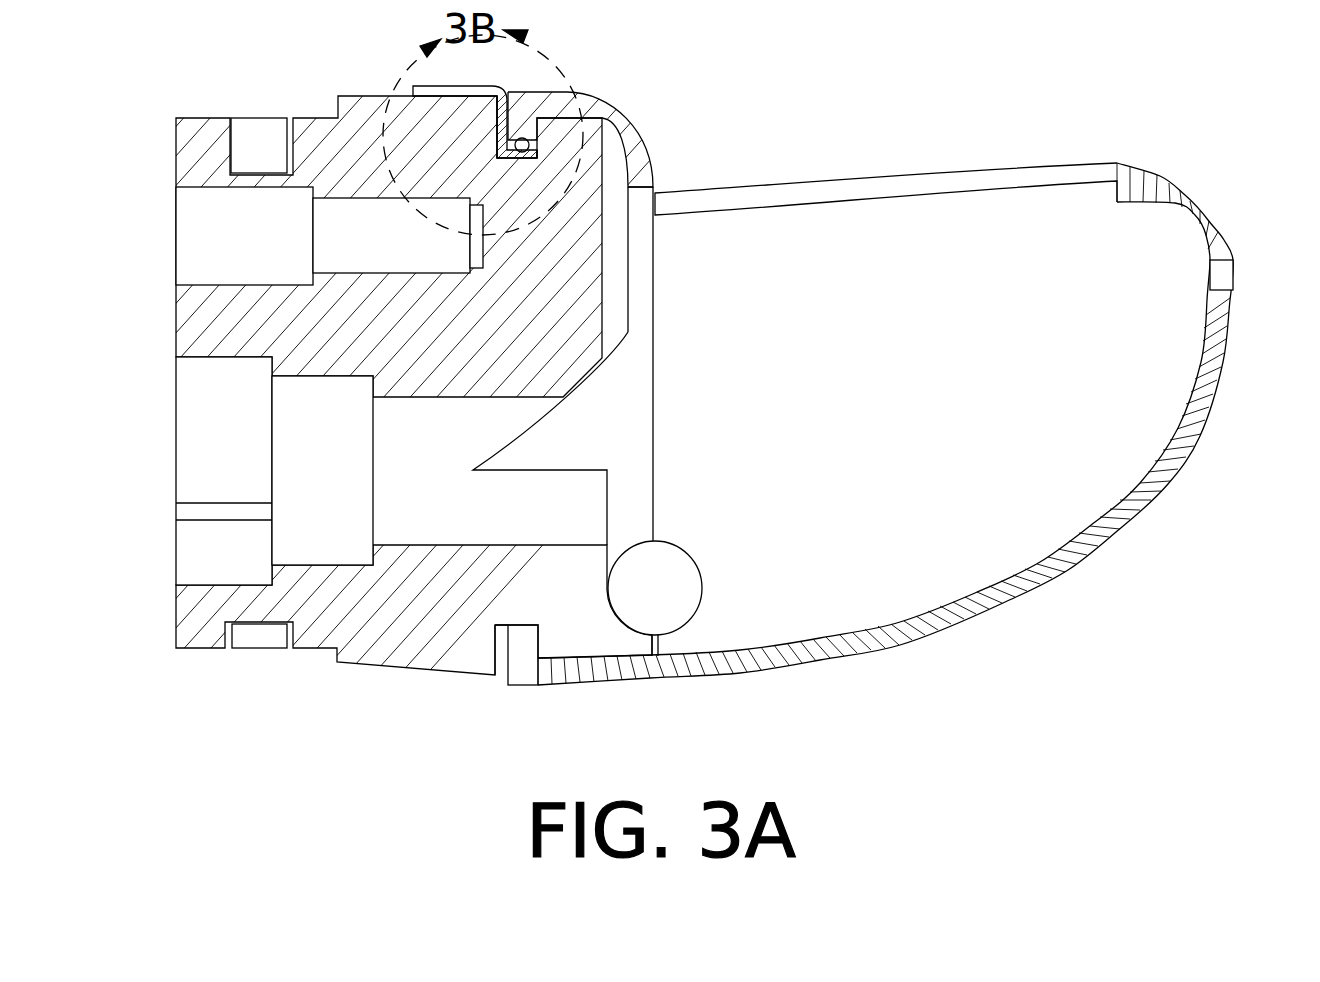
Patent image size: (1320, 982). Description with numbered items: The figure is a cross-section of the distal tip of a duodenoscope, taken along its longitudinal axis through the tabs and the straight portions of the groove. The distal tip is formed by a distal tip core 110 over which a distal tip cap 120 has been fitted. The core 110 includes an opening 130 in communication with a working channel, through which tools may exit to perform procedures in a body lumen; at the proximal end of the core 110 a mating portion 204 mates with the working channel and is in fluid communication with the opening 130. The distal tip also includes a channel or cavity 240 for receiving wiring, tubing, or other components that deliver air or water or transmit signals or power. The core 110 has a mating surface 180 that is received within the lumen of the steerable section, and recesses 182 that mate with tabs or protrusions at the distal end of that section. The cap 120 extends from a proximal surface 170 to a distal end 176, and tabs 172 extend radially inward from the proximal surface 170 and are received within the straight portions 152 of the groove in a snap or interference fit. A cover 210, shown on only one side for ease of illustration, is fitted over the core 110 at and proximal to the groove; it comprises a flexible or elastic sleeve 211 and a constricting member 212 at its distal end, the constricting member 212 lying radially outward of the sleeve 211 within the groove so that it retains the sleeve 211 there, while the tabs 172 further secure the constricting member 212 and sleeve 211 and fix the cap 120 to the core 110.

The distal tip core 110 is at (325, 622).
The distal tip cap 120 is at (1095, 377).
The opening 130 is at (558, 508).
The straight portions 152 is at (495, 155).
The proximal surface 170 is at (535, 102).
The tabs 172 is at (522, 127).
The distal end 176 is at (1217, 322).
The mating surface 180 is at (192, 650).
The recesses 182 is at (258, 128).
The mating portion 204 is at (205, 418).
The cover 210 is at (473, 108).
The sleeve 211 is at (545, 150).
The constricting member 212 is at (522, 152).
The channel or cavity 240 is at (205, 237).